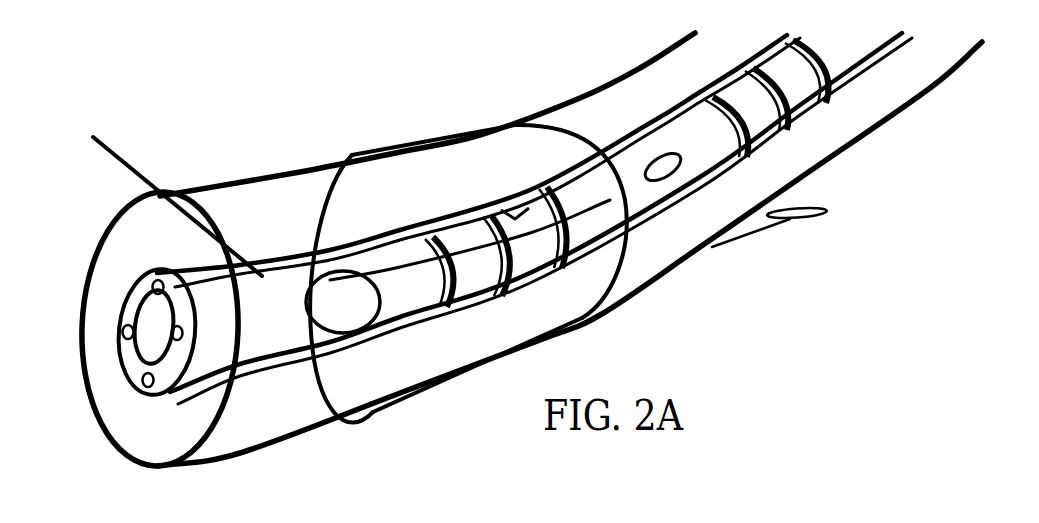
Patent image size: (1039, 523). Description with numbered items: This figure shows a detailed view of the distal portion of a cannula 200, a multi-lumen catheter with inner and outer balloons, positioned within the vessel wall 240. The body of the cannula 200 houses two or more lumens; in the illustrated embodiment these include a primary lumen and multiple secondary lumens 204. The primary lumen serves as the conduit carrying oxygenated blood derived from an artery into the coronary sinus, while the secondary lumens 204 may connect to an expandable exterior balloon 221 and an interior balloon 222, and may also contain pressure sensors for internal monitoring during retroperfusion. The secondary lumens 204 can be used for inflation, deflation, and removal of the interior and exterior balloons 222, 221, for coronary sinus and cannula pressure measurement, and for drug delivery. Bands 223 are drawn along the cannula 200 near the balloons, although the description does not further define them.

The vessel wall 240 is at (220, 183).
The cannula 200 is at (260, 273).
The secondary lumens 204 is at (122, 330).
The exterior balloon 221 is at (597, 296).
The interior balloon 222 is at (515, 212).
The ring bands 223 is at (560, 262).